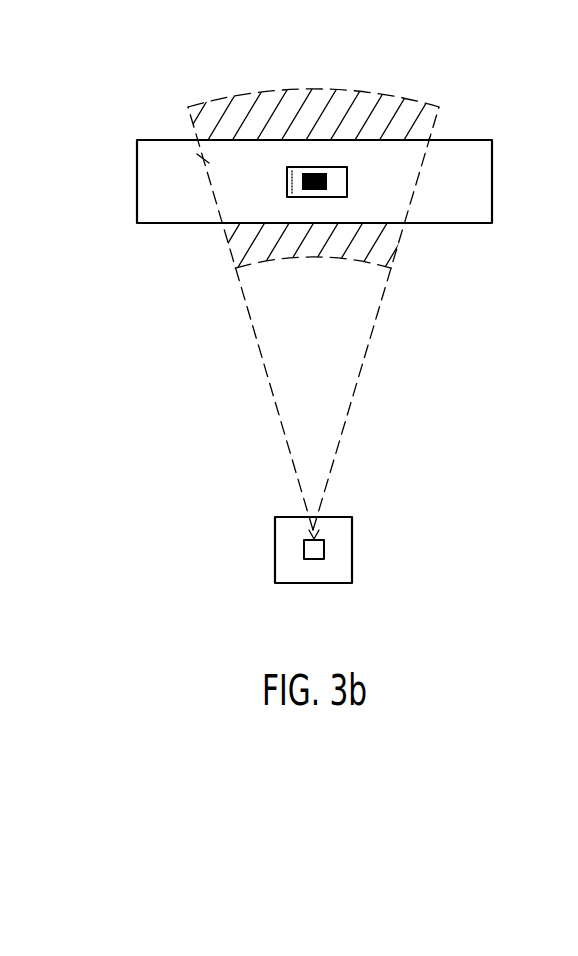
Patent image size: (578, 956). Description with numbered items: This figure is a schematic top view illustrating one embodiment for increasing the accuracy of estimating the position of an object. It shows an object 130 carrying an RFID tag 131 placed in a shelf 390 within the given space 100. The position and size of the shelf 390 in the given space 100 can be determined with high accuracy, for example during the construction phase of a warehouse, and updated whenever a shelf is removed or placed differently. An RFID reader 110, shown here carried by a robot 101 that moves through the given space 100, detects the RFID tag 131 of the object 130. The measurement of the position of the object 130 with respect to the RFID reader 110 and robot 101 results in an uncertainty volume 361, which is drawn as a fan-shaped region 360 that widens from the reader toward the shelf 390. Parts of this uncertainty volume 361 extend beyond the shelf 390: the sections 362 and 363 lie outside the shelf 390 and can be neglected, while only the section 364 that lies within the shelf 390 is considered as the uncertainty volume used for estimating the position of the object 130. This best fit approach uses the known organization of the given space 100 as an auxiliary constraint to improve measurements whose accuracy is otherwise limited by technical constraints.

The given space 100 is at (128, 393).
The robot 101 is at (352, 549).
The RFID reader 110 is at (308, 560).
The object 130 is at (347, 190).
The RFID tag 131 is at (323, 174).
The field of view 360 is at (367, 360).
The uncertainty volume 361 is at (440, 114).
The section of the uncertainty volume outside the shelf 362 is at (233, 97).
The section of the uncertainty volume outside the shelf 363 is at (237, 253).
The section of the uncertainty volume within the shelf 364 is at (205, 159).
The shelf 390 is at (483, 177).